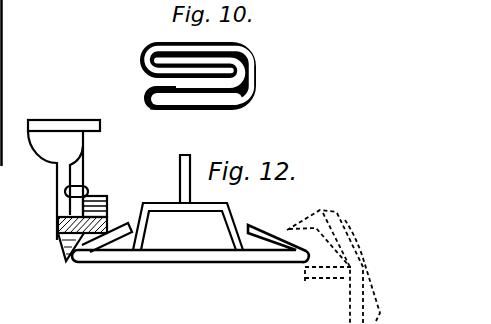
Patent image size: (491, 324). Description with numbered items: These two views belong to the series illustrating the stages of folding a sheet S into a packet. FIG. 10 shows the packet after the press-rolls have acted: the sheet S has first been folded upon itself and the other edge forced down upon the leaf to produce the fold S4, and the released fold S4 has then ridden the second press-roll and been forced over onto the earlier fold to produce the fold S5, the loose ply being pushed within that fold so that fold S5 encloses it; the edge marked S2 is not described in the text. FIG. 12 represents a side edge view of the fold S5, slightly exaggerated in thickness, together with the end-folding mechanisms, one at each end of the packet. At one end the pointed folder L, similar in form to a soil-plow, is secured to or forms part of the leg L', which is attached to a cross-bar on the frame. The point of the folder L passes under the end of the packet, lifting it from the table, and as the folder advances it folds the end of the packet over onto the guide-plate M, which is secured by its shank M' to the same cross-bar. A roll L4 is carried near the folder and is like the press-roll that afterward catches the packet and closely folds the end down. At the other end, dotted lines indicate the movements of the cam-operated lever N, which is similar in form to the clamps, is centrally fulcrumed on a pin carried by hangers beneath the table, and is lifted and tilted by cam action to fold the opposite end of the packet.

In FIG. 10, the sheet S is at (199, 108).
In FIG. 10, the spring lower free end S2 is at (150, 93).
In FIG. 10, the fold S4 is at (151, 53).
In FIG. 10, the fold S5 is at (243, 76).
In FIG. 12, the fold S5 is at (183, 258).
In FIG. 12, the pointed folder L is at (60, 252).
In FIG. 12, the leg L' is at (57, 180).
In FIG. 12, the roll L4 is at (89, 198).
In FIG. 12, the guide-plate M is at (188, 227).
In FIG. 12, the shank M' is at (168, 179).
In FIG. 12, the cam-operated lever N is at (320, 210).